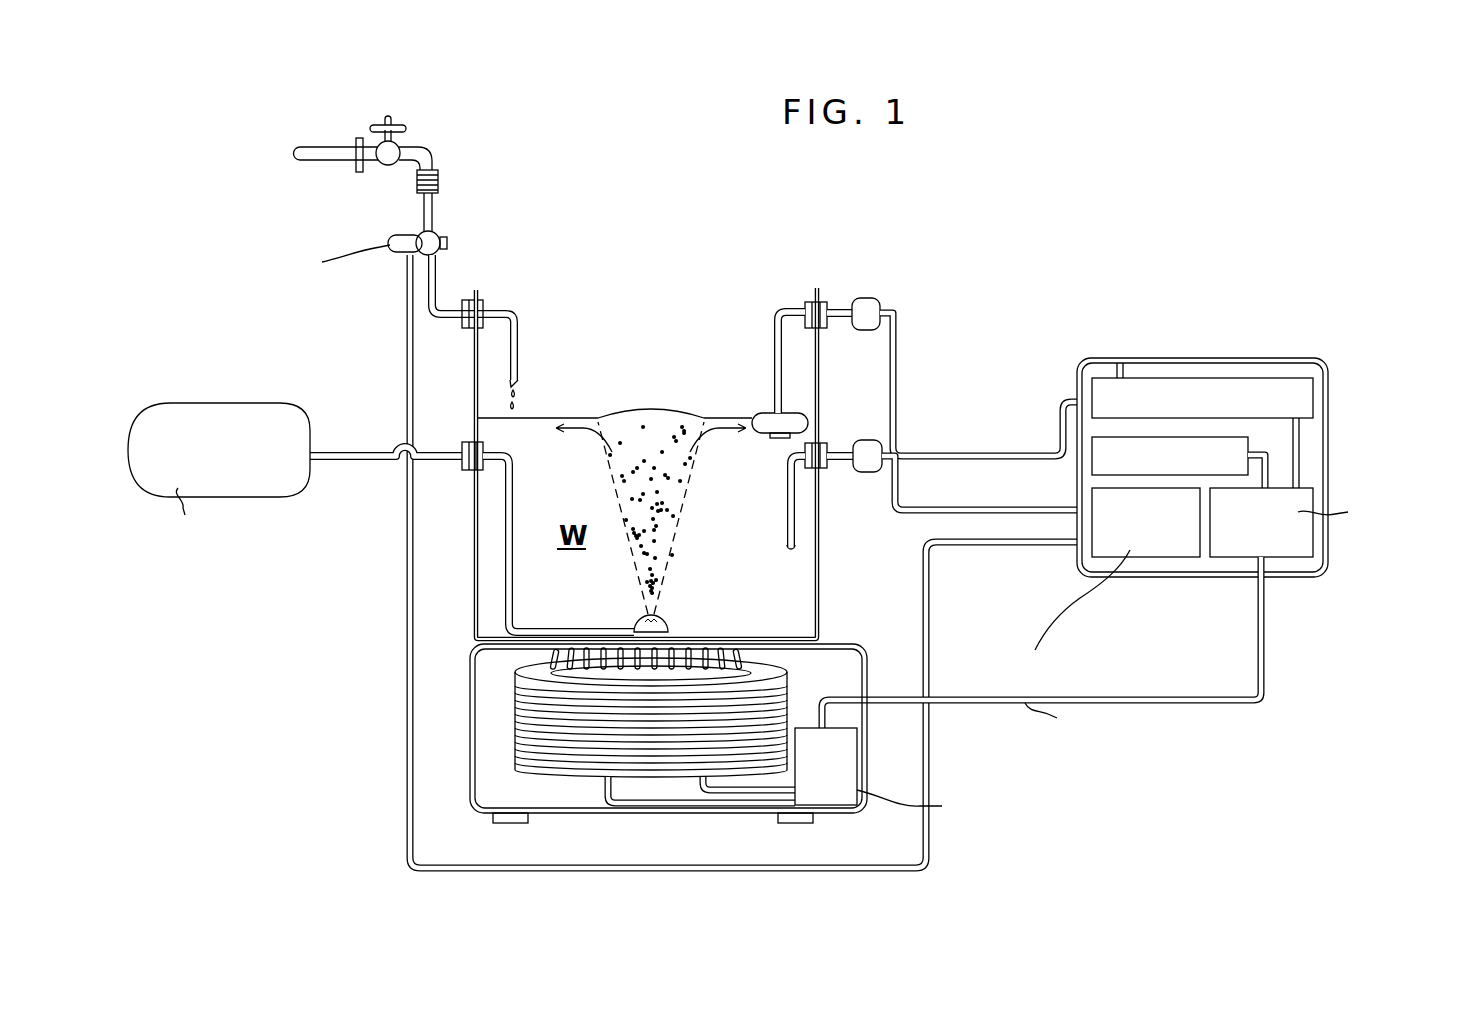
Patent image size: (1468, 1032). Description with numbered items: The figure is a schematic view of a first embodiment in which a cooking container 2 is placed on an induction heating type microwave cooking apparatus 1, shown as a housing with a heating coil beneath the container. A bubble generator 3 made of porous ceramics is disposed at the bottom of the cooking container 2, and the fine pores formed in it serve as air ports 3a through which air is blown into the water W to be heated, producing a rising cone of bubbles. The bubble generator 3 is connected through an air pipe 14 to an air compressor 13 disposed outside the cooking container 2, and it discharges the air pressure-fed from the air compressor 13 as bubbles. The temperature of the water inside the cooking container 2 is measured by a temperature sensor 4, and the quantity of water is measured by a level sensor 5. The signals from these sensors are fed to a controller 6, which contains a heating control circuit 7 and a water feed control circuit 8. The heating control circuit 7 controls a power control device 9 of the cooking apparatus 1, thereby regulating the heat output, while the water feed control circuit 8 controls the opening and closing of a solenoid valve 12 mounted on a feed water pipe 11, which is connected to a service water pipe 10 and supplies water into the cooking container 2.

The induction heating type microwave cooking apparatus 1 is at (470, 716).
The cooking container 2 is at (478, 578).
The bubble generator 3 is at (668, 632).
The air ports 3a is at (665, 620).
The temperature sensor 4 is at (795, 520).
The level sensor 5 is at (765, 412).
The controller 6 is at (1203, 357).
The heating control circuit 7 is at (1290, 557).
The water feed control circuit 8 is at (1157, 557).
The power control device 9 is at (840, 782).
The service water pipe 10 is at (313, 162).
The feed water pipe 11 is at (437, 280).
The solenoid valve 12 is at (440, 233).
The air compressor 13 is at (205, 403).
The air pipe 14 is at (347, 450).